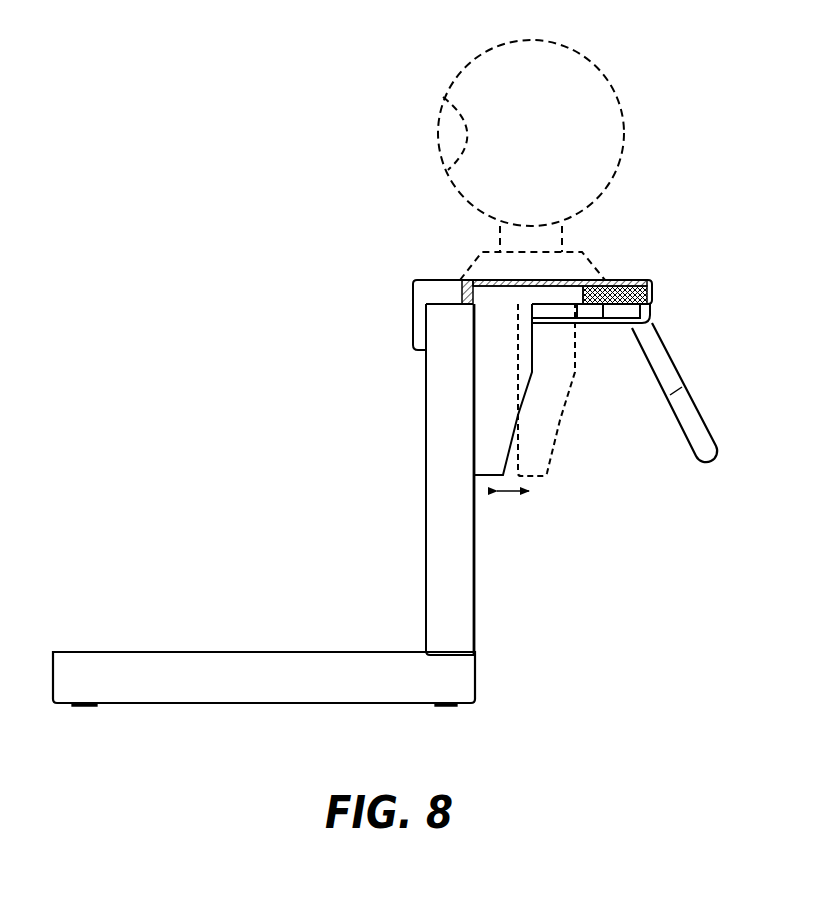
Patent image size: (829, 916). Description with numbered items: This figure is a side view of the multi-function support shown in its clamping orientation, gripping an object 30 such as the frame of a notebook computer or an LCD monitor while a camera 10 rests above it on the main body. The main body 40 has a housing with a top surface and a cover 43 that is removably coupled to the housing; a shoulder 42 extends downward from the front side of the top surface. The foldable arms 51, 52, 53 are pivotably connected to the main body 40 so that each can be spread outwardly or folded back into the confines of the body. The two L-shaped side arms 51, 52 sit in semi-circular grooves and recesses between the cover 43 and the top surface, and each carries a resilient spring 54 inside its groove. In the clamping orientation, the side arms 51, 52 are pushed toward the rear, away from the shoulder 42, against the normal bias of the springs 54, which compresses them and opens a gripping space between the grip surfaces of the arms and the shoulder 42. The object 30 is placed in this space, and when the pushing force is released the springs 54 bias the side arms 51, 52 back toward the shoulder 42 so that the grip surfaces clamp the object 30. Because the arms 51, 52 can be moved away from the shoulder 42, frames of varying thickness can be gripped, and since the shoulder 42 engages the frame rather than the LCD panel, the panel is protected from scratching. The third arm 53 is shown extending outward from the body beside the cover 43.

The camera 10 is at (623, 108).
The object 30 is at (422, 455).
The main body 40 is at (432, 276).
The shoulder 42 is at (413, 312).
The cover 43 is at (652, 312).
The side arm 51 is at (487, 477).
The side arm 52 is at (557, 425).
The foldable arm 53 is at (692, 412).
The spring 54 is at (618, 280).